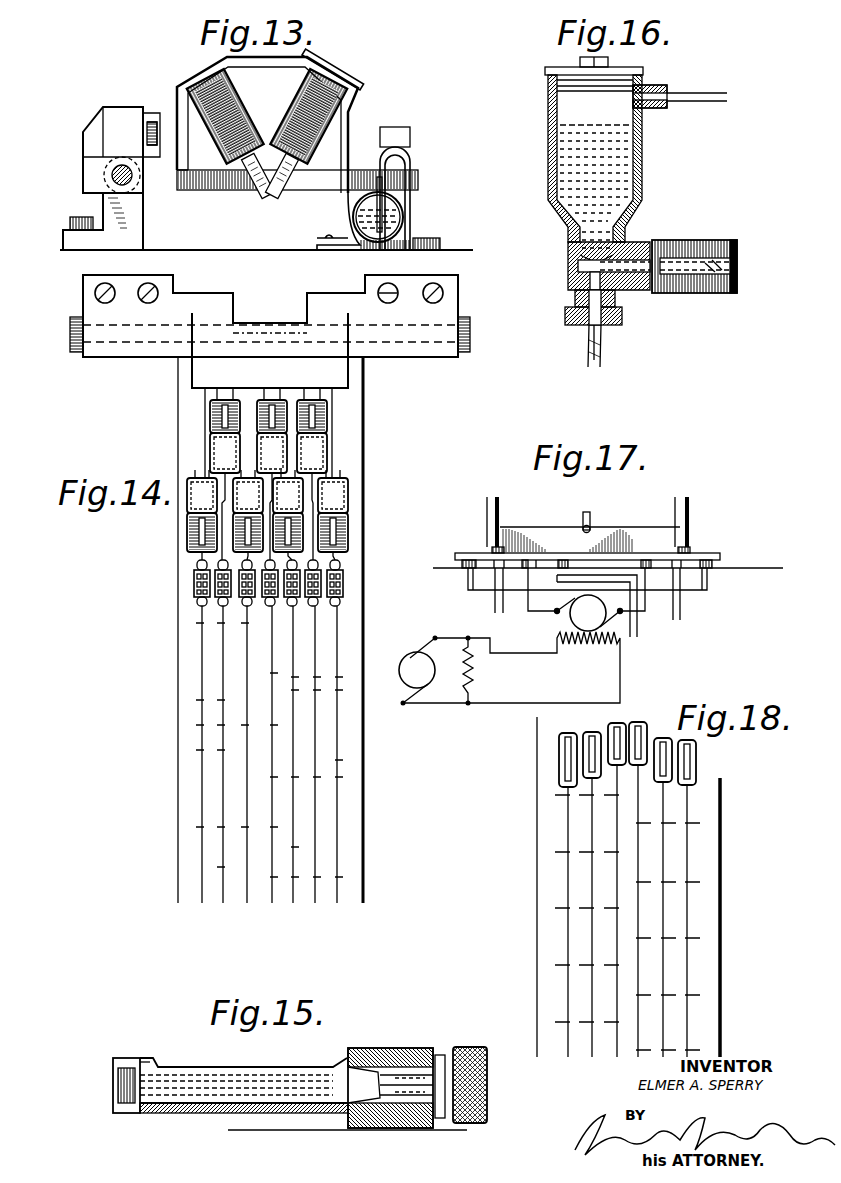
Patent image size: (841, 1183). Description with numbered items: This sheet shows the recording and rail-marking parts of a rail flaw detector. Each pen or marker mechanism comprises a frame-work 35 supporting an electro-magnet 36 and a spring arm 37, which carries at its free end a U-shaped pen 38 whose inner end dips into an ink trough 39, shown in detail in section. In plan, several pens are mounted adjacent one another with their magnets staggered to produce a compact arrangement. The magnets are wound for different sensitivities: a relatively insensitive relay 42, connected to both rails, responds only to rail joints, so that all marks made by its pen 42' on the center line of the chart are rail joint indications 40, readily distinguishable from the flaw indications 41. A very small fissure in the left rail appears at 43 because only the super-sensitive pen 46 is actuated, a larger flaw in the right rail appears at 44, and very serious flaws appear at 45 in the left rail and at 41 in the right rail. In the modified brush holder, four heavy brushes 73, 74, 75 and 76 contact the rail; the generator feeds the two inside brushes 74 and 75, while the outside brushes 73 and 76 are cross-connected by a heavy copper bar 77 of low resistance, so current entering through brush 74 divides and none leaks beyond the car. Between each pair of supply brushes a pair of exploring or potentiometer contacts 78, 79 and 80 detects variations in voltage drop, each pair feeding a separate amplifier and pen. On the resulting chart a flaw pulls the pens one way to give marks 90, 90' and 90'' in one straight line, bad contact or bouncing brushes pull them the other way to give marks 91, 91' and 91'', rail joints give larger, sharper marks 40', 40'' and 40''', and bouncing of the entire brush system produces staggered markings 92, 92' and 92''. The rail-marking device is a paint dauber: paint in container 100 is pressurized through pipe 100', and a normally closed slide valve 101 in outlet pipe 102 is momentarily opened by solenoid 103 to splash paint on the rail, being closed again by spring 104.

In FIG. 13, the frame-work 35 is at (269, 135).
In FIG. 13, the electro-magnet 36 is at (225, 116).
In FIG. 13, the spring arm 37 is at (308, 116).
In FIG. 13, the U-shaped pen 38 is at (414, 158).
In FIG. 13, the ink trough 39 is at (355, 215).
In FIG. 15, the ink trough 39 is at (197, 1113).
In FIG. 13, the relay 42 is at (334, 73).
In FIG. 14, the relay 42 is at (271, 410).
In FIG. 14, the pen 42' is at (261, 771).
In FIG. 14, the rail joint indications 40 is at (259, 754).
In FIG. 14, the flaw indication 41 is at (333, 695).
In FIG. 14, the small fissure indication 43 is at (198, 648).
In FIG. 14, the larger flaw indication 44 is at (318, 630).
In FIG. 14, the serious flaw indication 45 is at (240, 755).
In FIG. 14, the super-sensitive pen 46 is at (193, 585).
In FIG. 17, the brush 73 is at (462, 562).
In FIG. 17, the brush 74 is at (530, 558).
In FIG. 17, the brush 75 is at (643, 558).
In FIG. 17, the brush 76 is at (714, 561).
In FIG. 17, the copper bar 77 is at (695, 588).
In FIG. 17, the detector brushes 78 is at (492, 553).
In FIG. 17, the detector brushes 79 is at (573, 556).
In FIG. 17, the detector brushes 80 is at (683, 557).
In FIG. 18, the flaw mark 90 is at (559, 895).
In FIG. 18, the flaw mark 90' is at (587, 894).
In FIG. 18, the flaw mark 90'' is at (614, 890).
In FIG. 18, the bad-contact mark 91 is at (605, 972).
In FIG. 18, the bad-contact mark 91' is at (635, 972).
In FIG. 18, the bad-contact mark 91'' is at (662, 972).
In FIG. 18, the staggered marking 92 is at (647, 889).
In FIG. 18, the staggered marking 92' is at (659, 897).
In FIG. 18, the staggered marking 92'' is at (702, 898).
In FIG. 18, the rail joint mark 40' is at (556, 876).
In FIG. 18, the rail joint mark 40'' is at (589, 885).
In FIG. 18, the rail joint mark 40''' is at (618, 885).
In FIG. 16, the container 100 is at (574, 160).
In FIG. 16, the pipe 100' is at (682, 86).
In FIG. 16, the valve 101 is at (578, 266).
In FIG. 16, the outlet pipe 102 is at (598, 345).
In FIG. 16, the solenoid 103 is at (692, 287).
In FIG. 16, the spring 104 is at (715, 256).